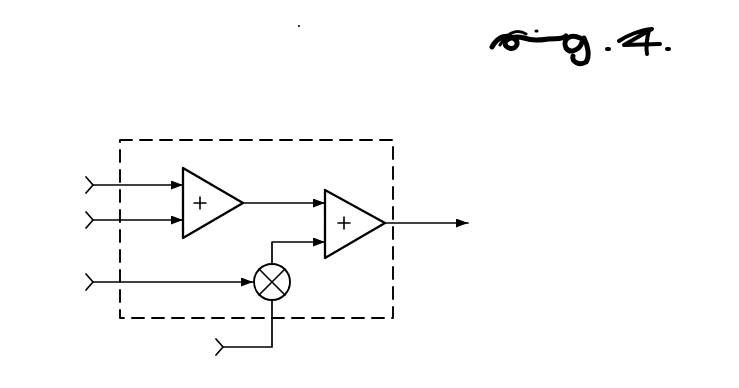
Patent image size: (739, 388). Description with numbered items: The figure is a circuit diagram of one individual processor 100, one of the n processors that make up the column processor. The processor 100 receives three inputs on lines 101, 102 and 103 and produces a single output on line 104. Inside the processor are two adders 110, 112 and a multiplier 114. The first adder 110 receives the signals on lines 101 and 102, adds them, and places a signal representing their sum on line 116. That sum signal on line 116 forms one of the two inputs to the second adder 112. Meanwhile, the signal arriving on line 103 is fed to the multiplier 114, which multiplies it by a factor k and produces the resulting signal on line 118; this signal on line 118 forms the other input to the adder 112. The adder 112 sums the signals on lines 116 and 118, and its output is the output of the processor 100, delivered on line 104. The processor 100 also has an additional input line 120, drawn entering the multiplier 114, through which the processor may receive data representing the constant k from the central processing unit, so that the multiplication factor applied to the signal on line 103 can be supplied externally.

The individual processor 100 is at (377, 137).
The input line 101 is at (103, 182).
The input line 102 is at (100, 225).
The input line 103 is at (280, 340).
The output line 104 is at (418, 222).
The adder 110 is at (218, 186).
The adder 112 is at (350, 197).
The multiplier 114 is at (287, 294).
The line 116 is at (284, 201).
The line 118 is at (288, 241).
The input line 120 is at (101, 288).